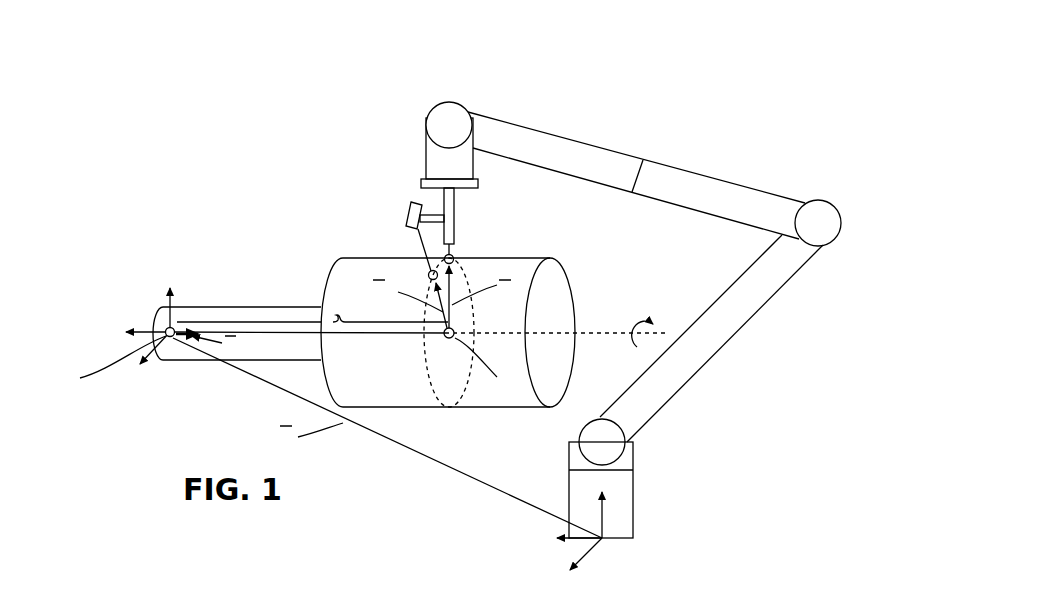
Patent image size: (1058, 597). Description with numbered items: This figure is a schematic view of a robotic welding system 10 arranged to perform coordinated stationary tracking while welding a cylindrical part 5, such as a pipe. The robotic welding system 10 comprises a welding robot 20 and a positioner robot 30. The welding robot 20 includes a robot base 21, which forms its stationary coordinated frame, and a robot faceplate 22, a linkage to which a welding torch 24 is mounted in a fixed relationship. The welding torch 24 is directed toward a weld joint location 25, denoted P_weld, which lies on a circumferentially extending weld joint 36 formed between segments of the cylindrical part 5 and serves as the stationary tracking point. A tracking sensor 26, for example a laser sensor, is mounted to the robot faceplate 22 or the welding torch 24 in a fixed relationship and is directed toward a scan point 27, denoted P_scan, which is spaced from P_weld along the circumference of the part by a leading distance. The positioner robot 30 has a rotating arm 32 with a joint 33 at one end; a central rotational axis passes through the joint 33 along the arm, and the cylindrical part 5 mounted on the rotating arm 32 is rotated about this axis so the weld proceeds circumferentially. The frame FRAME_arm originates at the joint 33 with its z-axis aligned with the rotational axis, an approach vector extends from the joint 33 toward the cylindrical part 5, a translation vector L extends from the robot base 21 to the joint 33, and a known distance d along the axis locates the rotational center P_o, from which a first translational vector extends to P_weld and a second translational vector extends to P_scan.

The cylindrical part 5 is at (335, 288).
The robotic welding system 10 is at (266, 99).
The welding robot 20 is at (430, 148).
The robot base 21 is at (603, 537).
The robot faceplate 22 is at (421, 185).
The welding torch 24 is at (455, 220).
The weld joint location 25 is at (458, 256).
The tracking sensor 26 is at (410, 219).
The scan point 27 is at (429, 273).
The positioner robot 30 is at (153, 309).
The rotating arm 32 is at (278, 315).
The joint 33 is at (169, 338).
The weld joint 36 is at (432, 378).